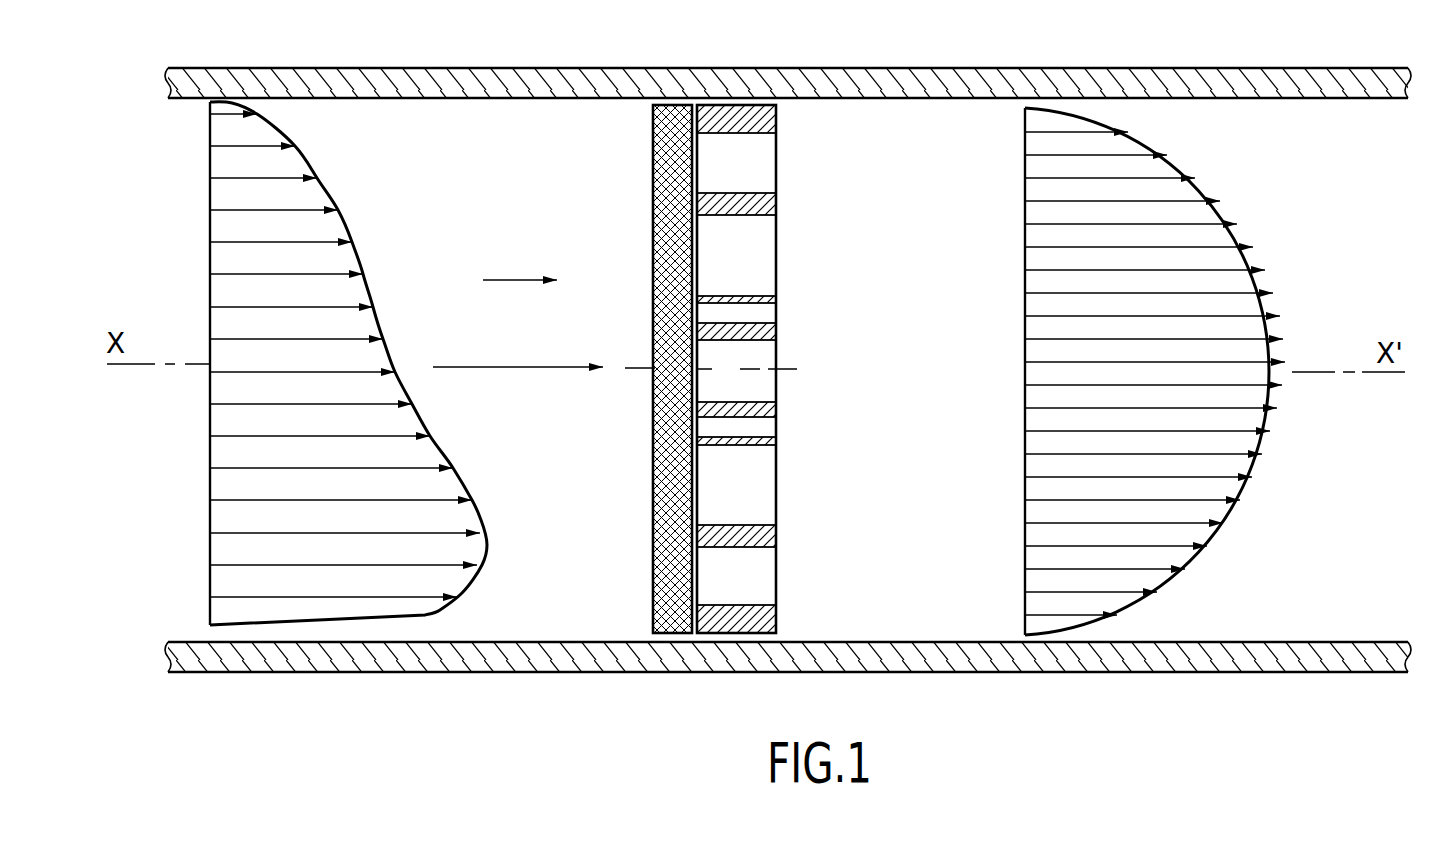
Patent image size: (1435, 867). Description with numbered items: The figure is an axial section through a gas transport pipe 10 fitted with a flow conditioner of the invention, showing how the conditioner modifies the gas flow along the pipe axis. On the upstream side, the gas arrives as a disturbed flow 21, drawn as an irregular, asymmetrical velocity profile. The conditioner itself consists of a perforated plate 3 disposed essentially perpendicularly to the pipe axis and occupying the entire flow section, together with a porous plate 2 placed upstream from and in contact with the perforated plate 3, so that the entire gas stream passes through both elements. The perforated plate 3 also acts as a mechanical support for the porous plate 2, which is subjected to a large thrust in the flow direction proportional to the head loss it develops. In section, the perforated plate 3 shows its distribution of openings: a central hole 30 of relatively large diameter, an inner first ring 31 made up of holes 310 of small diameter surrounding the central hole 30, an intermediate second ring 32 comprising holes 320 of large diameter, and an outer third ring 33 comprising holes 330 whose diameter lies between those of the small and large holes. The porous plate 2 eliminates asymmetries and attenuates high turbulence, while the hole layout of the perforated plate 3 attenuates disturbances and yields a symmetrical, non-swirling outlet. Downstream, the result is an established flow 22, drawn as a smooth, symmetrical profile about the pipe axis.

The gas transport pipe 10 is at (520, 78).
The porous plate 2 is at (650, 568).
The disturbed flow 21 is at (450, 452).
The established flow 22 is at (1268, 470).
The perforated plate 3 is at (790, 369).
The central hole 30 is at (762, 340).
The inner first ring 31 is at (785, 318).
The intermediate second ring 32 is at (787, 265).
The outer third ring 33 is at (785, 173).
The holes of small diameter 310 is at (763, 303).
The holes of large diameter 320 is at (757, 215).
The holes of intermediate diameter 330 is at (756, 134).